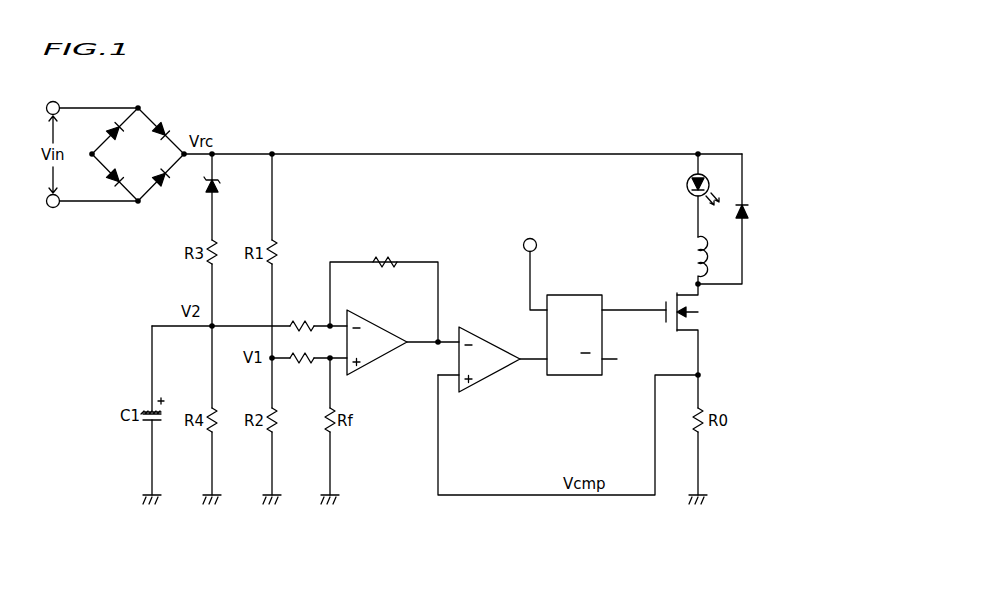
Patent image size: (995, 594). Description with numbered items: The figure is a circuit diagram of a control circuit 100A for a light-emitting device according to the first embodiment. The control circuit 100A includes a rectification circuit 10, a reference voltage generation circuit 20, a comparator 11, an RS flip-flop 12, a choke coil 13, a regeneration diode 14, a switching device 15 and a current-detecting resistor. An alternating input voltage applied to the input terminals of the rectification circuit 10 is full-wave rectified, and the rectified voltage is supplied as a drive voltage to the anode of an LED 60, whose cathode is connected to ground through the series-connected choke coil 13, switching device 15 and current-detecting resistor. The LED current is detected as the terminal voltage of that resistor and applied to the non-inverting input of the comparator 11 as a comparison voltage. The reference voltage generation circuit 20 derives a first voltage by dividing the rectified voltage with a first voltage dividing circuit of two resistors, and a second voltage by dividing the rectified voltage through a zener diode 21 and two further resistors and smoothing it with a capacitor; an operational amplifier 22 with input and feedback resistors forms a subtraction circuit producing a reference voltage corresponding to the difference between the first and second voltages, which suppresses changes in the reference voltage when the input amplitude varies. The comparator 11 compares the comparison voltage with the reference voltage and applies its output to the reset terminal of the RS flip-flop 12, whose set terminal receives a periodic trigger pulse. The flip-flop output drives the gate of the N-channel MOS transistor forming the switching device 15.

The control circuit 100A is at (458, 131).
The rectification circuit 10 is at (163, 106).
The zener diode 21 is at (224, 190).
The reference voltage generation circuit 20 is at (335, 225).
The operational amplifier 22 is at (386, 370).
The comparator 11 is at (482, 328).
The RS flip-flop 12 is at (584, 293).
The LED 60 is at (686, 185).
The choke coil 13 is at (688, 252).
The regeneration diode 14 is at (754, 214).
The switching device 15 is at (712, 313).